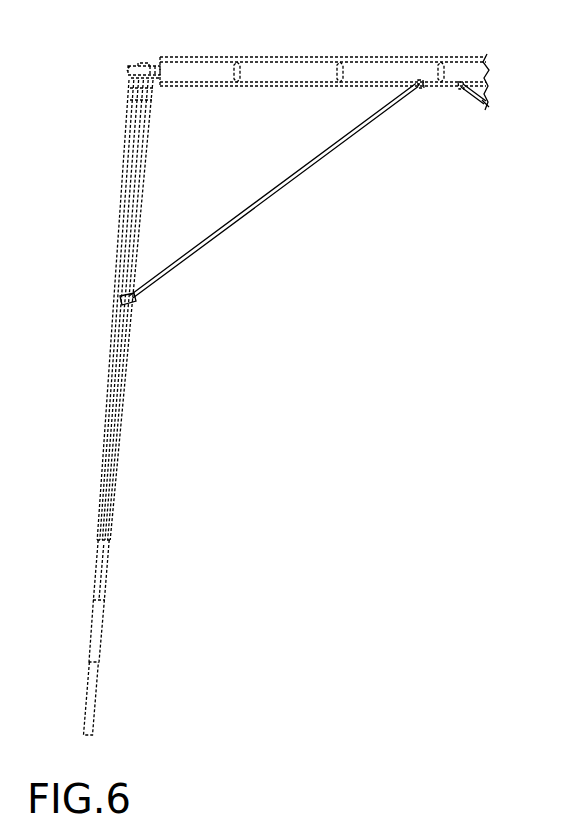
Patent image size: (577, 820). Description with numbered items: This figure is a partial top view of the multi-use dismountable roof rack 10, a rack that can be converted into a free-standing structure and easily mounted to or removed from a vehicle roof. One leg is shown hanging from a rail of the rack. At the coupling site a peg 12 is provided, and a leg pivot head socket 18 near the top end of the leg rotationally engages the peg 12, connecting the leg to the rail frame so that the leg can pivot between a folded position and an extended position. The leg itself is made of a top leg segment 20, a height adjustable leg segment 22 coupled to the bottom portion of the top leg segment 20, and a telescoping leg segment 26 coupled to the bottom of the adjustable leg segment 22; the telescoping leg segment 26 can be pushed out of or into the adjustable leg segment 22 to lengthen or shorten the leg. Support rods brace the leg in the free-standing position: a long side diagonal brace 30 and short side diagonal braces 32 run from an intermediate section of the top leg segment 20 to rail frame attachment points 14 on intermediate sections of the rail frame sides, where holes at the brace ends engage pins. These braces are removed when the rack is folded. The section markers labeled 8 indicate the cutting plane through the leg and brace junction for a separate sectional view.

The section line 8- 8 is at (108, 277).
The multi-use dismountable roof rack 10 is at (292, 62).
The peg 12 is at (127, 70).
The rail frame attachment point 14 is at (132, 77).
The leg pivot head socket 18 is at (145, 63).
The top leg segment 20 is at (129, 136).
The height adjustable leg segment 22 is at (98, 622).
The telescoping leg segment 26 is at (88, 695).
The long side diagonal brace 30 is at (157, 112).
The short side diagonal brace 32 is at (300, 168).